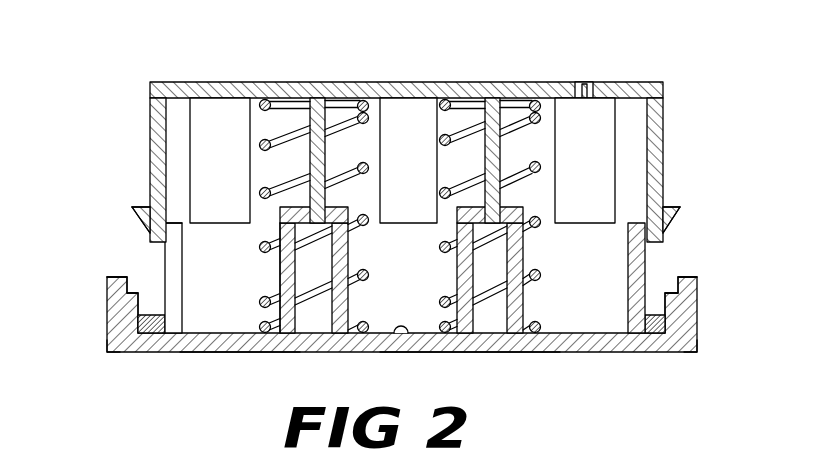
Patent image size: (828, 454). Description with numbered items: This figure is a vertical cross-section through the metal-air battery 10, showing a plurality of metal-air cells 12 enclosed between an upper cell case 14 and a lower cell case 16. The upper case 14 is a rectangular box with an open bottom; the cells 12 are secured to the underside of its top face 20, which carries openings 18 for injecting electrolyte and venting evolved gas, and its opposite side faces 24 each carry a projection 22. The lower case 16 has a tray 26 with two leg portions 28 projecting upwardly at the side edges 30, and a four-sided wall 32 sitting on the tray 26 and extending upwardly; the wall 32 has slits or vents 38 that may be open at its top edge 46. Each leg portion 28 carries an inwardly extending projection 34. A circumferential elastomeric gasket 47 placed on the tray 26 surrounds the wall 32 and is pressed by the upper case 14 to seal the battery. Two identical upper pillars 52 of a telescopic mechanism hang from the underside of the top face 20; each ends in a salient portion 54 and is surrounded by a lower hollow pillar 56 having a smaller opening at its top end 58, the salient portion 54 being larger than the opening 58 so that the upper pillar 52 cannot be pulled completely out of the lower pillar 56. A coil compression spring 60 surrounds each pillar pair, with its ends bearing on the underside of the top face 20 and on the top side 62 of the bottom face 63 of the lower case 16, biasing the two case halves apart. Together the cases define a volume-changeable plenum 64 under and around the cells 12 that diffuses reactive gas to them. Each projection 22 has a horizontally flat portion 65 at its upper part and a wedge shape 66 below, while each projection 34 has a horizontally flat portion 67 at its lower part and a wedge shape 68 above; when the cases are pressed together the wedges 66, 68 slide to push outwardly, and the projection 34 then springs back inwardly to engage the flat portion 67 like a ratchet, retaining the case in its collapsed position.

The metal-air battery 10 is at (196, 52).
The metal-air cells 12 is at (207, 169).
The upper cell case 14 is at (149, 81).
The lower cell case 16 is at (440, 352).
The openings 18 is at (583, 82).
The top face 20 is at (390, 79).
The projections 22 is at (139, 208).
The side faces 24 is at (149, 123).
The tray 26 is at (217, 346).
The leg portions 28 is at (102, 342).
The side edges 30 is at (96, 348).
The four-sided wall 32 is at (633, 270).
The projections 34 is at (130, 291).
The vent 38 is at (174, 268).
The top edge 46 is at (173, 225).
The circumferential elastomeric gasket 47 is at (150, 335).
The upper pillars 52 is at (305, 152).
The salient portion 54 is at (324, 241).
The lower hollow pillar 56 is at (262, 320).
The top end opening 58 is at (327, 207).
The coil compression spring 60 is at (269, 97).
The top side 62 is at (404, 338).
The bottom face 63 is at (273, 357).
The plenum 64 is at (211, 290).
The horizontally flat portion 65 is at (146, 205).
The wedge shape 66 is at (136, 214).
The horizontally flat portion 67 is at (127, 296).
The wedge shape 68 is at (130, 273).